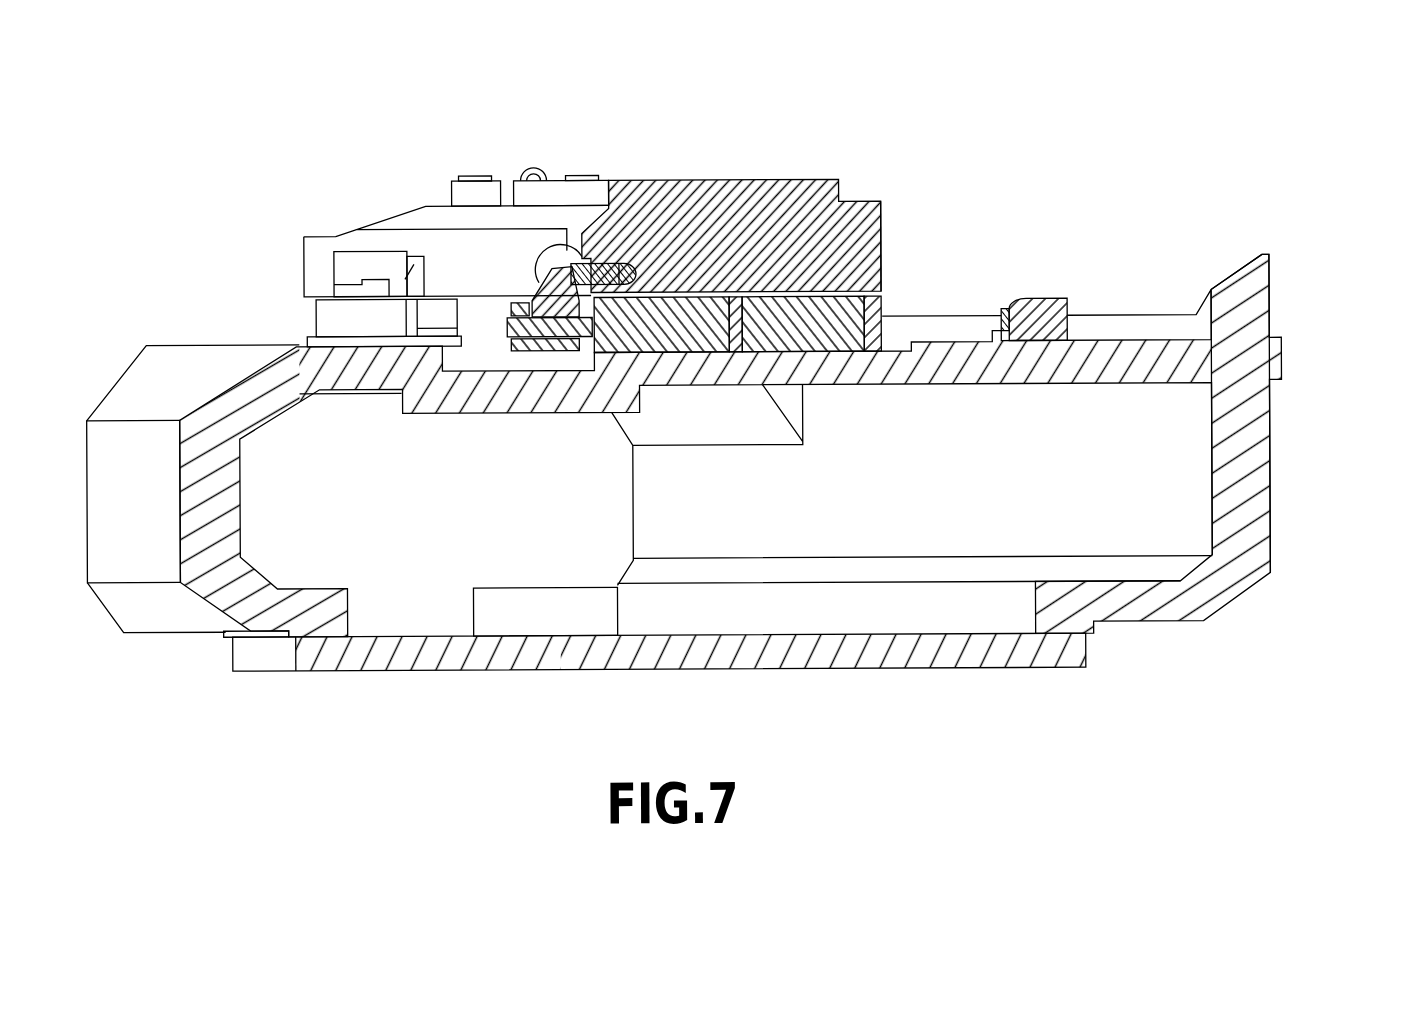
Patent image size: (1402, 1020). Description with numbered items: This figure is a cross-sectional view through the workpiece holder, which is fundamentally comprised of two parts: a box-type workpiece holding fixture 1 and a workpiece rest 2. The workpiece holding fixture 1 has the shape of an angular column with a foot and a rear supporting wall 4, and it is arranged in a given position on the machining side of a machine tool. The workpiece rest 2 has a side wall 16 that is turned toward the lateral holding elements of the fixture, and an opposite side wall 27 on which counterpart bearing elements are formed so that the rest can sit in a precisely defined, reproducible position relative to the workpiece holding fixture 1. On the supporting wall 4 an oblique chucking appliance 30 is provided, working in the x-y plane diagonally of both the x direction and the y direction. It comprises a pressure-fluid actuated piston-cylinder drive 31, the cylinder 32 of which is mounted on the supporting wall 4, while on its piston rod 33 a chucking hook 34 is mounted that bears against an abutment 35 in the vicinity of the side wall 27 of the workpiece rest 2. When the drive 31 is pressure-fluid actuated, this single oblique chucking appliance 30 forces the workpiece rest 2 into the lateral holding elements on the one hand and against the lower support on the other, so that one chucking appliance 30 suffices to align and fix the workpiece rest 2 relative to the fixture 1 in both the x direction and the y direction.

The workpiece holding fixture 1 is at (1280, 527).
The workpiece rest 2 is at (895, 214).
The rear supporting wall 4 is at (1243, 422).
The side wall 16 is at (885, 258).
The side wall 27 is at (470, 257).
The oblique chucking appliance 30 is at (485, 146).
The piston-cylinder drive 31 is at (790, 369).
The cylinder 32 is at (680, 327).
The piston rod 33 is at (570, 302).
The chucking hook 34 is at (562, 305).
The abutment 35 is at (581, 250).